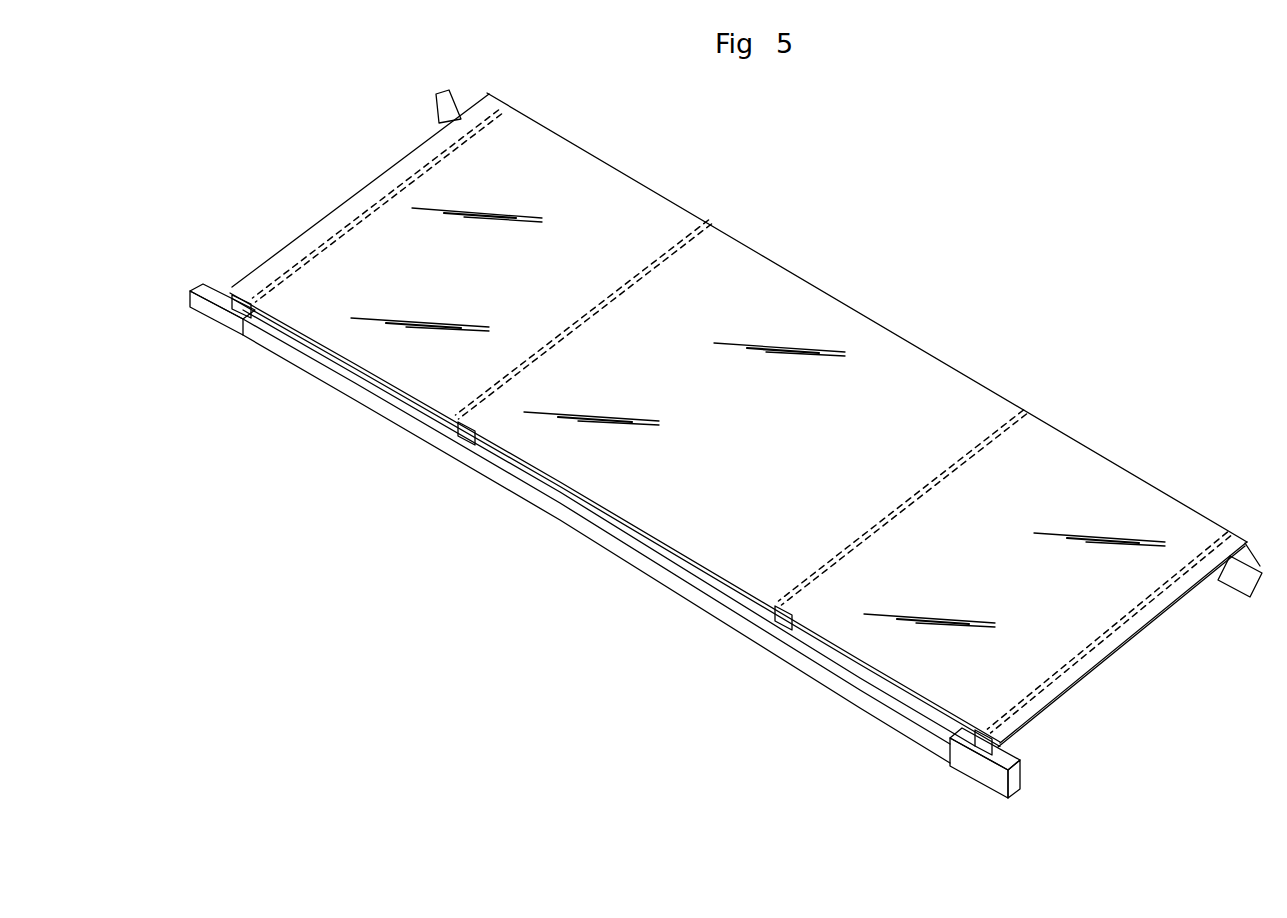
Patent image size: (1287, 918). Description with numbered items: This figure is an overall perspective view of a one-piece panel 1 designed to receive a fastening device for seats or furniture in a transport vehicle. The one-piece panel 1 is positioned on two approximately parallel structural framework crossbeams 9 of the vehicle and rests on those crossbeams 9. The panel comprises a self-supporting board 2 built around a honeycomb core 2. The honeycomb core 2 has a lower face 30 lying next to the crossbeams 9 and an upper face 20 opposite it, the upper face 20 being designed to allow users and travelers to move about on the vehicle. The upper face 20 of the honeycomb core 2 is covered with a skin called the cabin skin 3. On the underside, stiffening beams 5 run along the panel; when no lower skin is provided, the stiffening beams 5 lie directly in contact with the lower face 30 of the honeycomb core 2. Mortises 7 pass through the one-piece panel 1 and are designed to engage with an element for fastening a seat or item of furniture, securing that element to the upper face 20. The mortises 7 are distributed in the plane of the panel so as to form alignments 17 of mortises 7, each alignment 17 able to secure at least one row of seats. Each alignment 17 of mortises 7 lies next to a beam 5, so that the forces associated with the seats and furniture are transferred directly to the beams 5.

The one-piece panel 1 is at (867, 420).
The self-supporting board / honeycomb core 2 is at (605, 541).
The cabin skin 3 is at (1014, 497).
The stiffening beam 5 is at (612, 545).
The mortise 7 is at (742, 374).
The structural framework crossbeam 9 is at (344, 188).
The alignment of mortises 17 is at (766, 376).
The upper face 20 is at (602, 303).
The lower face 30 is at (1188, 652).